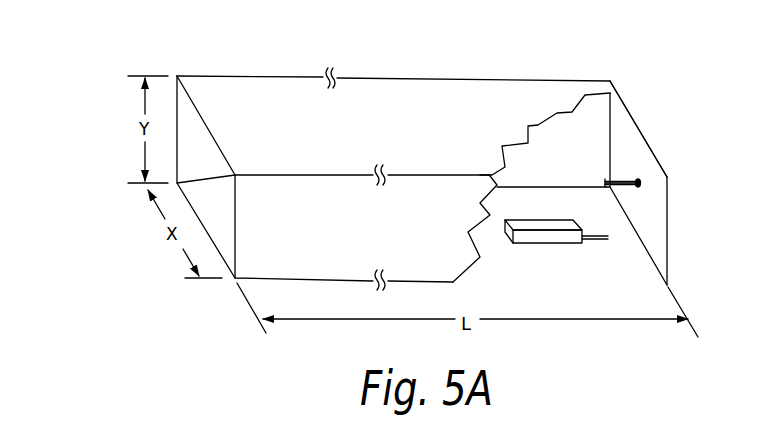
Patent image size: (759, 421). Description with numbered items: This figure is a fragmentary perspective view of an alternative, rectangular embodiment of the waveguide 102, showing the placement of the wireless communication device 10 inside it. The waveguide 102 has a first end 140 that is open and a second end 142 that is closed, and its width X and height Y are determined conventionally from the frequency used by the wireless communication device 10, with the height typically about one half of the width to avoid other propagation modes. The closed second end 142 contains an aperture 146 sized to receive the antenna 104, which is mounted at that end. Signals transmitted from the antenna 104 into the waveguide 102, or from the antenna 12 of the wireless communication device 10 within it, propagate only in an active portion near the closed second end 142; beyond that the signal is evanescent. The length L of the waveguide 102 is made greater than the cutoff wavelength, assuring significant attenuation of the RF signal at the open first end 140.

The waveguide 102 is at (455, 78).
The antenna 104 is at (620, 180).
The first end 140 is at (208, 167).
The second end 142 is at (649, 145).
The aperture 146 is at (640, 187).
The wireless communication device 10 is at (535, 245).
The antenna 12 is at (606, 240).